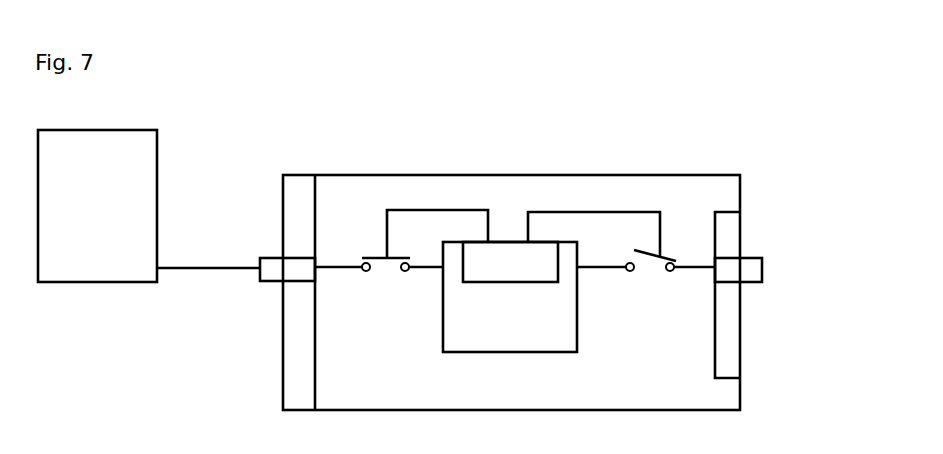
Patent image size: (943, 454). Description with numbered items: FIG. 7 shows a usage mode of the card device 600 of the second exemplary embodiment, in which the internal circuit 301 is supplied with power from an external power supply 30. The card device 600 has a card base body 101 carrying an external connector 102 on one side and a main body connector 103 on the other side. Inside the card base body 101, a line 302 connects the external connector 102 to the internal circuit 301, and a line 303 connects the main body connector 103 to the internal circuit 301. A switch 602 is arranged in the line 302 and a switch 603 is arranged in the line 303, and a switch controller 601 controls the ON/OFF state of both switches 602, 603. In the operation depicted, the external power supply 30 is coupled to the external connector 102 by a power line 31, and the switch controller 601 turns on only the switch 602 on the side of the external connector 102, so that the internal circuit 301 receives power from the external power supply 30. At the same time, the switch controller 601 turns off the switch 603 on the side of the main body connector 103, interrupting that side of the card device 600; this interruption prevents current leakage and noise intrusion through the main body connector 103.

The external power supply 30 is at (157, 163).
The power line 31 is at (188, 269).
The card base body 101 is at (647, 175).
The external connector 102 is at (275, 282).
The main body connector 103 is at (762, 260).
The internal circuit 301 is at (545, 355).
The line 302 is at (336, 270).
The line 303 is at (600, 270).
The card device 600 is at (548, 246).
The switch controller 601 is at (505, 240).
The switch 602 is at (395, 272).
The switch 603 is at (656, 262).